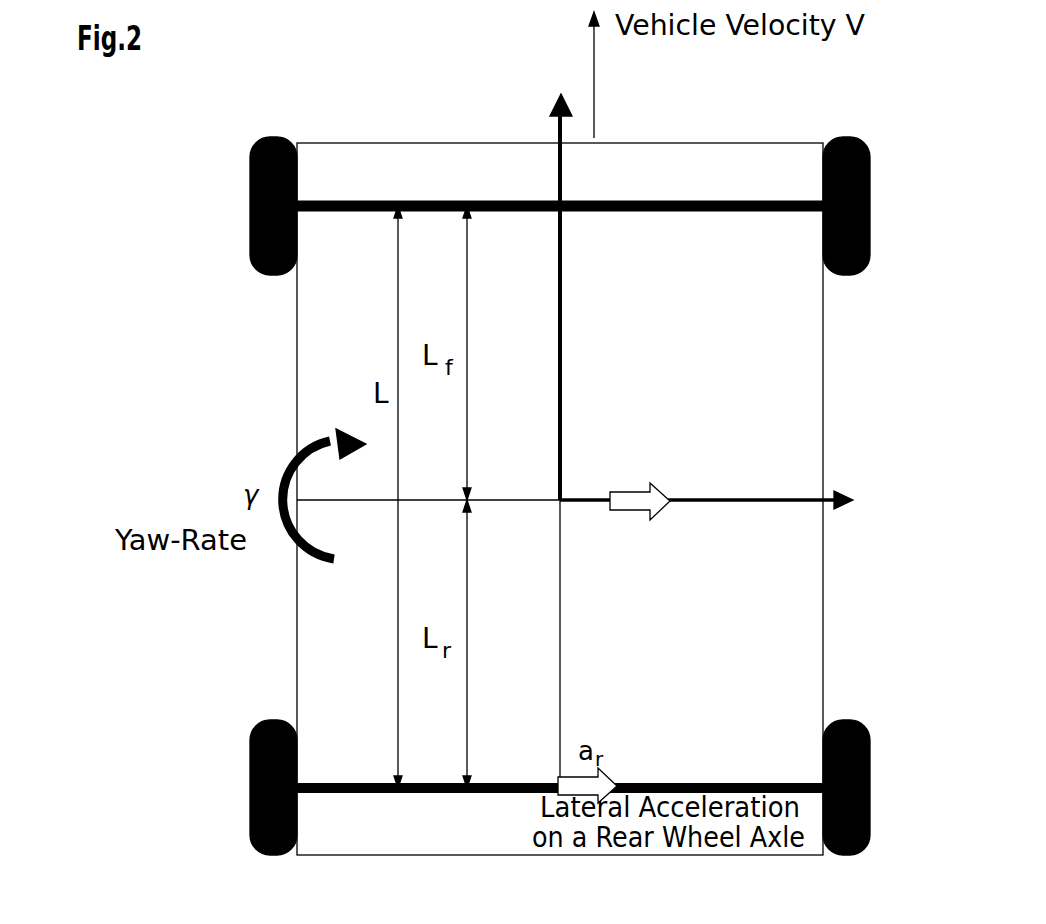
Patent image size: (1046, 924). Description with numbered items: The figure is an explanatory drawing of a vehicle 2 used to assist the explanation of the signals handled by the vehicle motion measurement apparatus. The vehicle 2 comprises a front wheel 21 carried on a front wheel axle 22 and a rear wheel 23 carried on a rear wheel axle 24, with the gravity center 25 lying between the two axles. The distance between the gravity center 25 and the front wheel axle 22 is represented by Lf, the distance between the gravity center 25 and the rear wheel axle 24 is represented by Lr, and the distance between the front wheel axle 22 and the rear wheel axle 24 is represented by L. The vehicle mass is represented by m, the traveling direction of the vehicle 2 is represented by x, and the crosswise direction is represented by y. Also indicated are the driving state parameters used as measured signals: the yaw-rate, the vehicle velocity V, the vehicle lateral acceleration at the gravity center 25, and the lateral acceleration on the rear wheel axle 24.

The vehicle 2 is at (270, 366).
The front wheel 21 is at (600, 206).
The front wheel axle 22 is at (679, 213).
The rear wheel 23 is at (847, 718).
The rear wheel axle 24 is at (366, 783).
The gravity center 25 is at (555, 502).